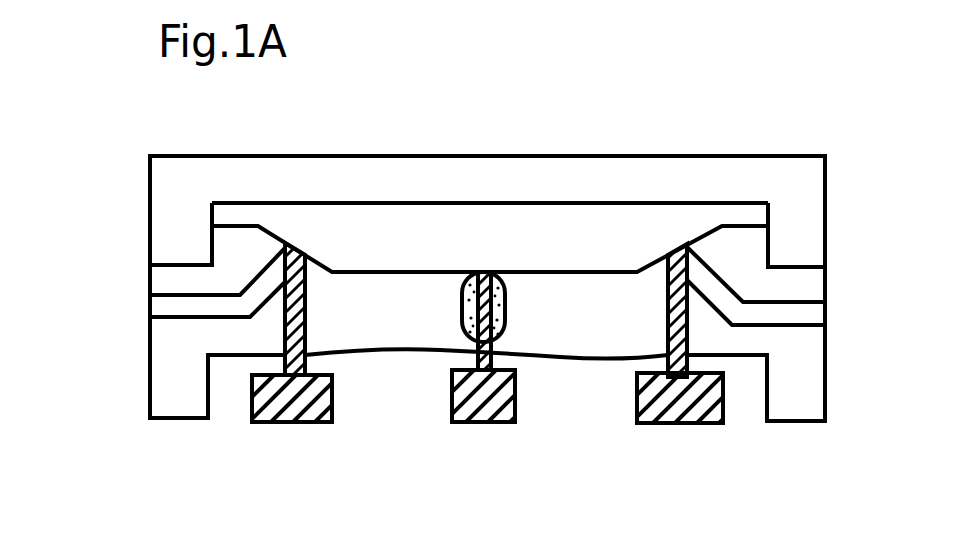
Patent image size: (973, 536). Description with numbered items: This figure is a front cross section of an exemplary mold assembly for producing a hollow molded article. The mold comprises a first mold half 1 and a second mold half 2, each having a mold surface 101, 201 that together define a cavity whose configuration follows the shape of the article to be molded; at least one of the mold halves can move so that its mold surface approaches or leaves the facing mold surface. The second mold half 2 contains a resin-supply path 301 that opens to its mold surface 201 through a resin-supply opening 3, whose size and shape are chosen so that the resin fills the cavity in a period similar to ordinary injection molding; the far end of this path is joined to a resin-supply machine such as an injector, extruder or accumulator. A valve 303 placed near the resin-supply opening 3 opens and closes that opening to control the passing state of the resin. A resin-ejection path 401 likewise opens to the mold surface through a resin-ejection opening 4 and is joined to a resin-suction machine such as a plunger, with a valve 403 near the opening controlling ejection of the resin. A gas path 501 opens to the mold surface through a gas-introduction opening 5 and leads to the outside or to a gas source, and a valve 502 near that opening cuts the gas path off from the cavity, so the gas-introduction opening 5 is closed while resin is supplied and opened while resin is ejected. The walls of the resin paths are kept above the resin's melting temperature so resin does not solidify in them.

The first mold half 1 is at (430, 180).
The mold surface 101 is at (500, 203).
The second mold half 2 is at (807, 371).
The mold surface 201 is at (558, 274).
The resin-supply opening 3 is at (487, 260).
The resin-supply path 301 is at (502, 305).
The valve 303 is at (497, 422).
The resin-ejection opening 4 is at (285, 245).
The resin-ejection path 401 is at (183, 305).
The valve 403 is at (305, 312).
The gas-introduction opening 5 is at (675, 248).
The gas path 501 is at (772, 311).
The valve 502 is at (705, 305).